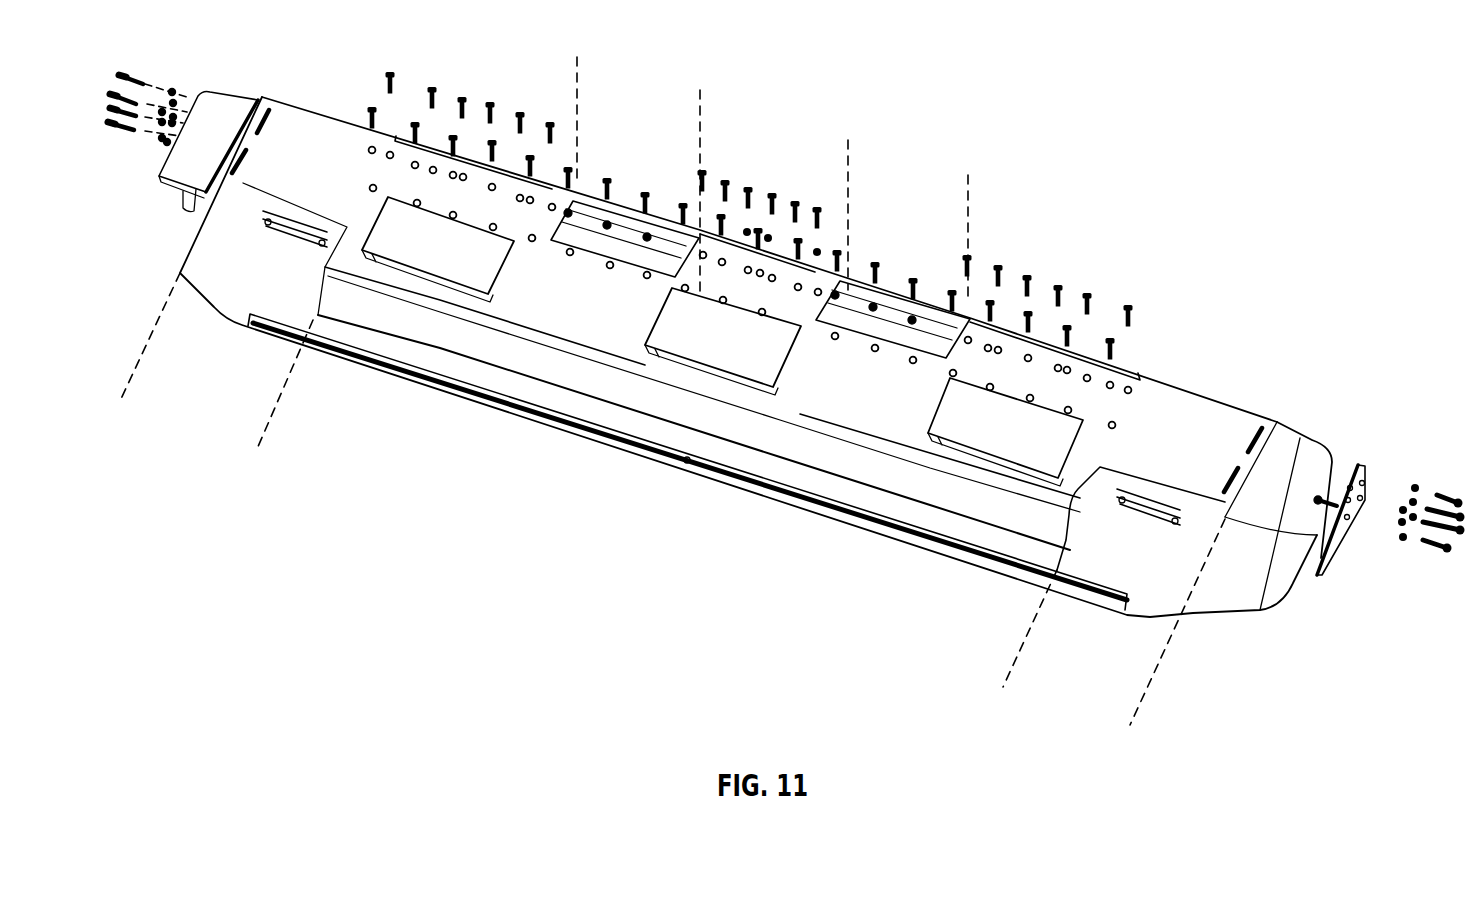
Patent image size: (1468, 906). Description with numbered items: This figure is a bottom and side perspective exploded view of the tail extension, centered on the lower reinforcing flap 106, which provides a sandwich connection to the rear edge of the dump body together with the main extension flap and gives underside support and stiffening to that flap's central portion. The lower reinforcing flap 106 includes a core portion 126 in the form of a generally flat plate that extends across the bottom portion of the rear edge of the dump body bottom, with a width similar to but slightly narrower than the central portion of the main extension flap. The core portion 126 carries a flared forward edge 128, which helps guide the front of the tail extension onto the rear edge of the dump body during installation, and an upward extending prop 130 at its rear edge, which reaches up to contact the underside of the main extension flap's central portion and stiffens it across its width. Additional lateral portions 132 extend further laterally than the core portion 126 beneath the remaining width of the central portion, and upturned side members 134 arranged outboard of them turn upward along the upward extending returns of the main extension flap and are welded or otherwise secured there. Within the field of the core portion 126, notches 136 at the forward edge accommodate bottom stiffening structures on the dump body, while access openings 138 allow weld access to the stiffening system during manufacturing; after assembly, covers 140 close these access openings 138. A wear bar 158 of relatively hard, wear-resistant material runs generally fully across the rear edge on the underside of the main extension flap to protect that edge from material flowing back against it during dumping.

The lower reinforcing flap 106 is at (220, 107).
The core portion 126 is at (1003, 687).
The flared forward edge 128 is at (1137, 365).
The upward extending prop 130 is at (1075, 530).
The additional lateral portions 132 is at (120, 401).
The upturned side members 134 is at (170, 163).
The accommodating notches 136 is at (577, 57).
The access openings 138 is at (997, 465).
The covers 140 is at (458, 258).
The wear bar 158 is at (843, 510).